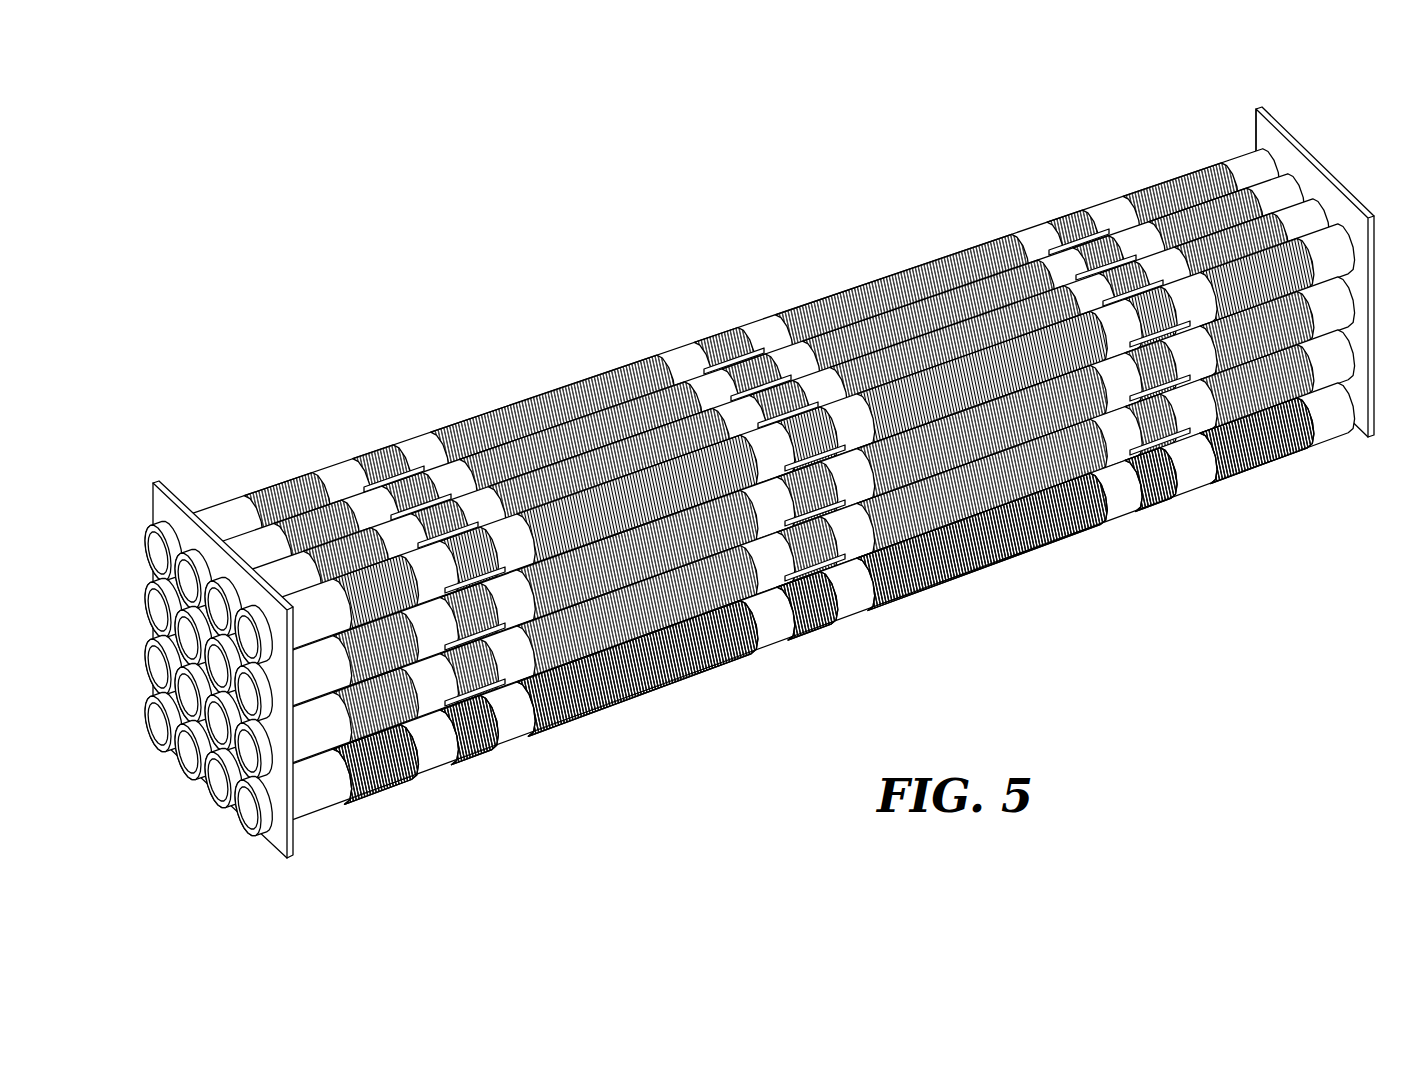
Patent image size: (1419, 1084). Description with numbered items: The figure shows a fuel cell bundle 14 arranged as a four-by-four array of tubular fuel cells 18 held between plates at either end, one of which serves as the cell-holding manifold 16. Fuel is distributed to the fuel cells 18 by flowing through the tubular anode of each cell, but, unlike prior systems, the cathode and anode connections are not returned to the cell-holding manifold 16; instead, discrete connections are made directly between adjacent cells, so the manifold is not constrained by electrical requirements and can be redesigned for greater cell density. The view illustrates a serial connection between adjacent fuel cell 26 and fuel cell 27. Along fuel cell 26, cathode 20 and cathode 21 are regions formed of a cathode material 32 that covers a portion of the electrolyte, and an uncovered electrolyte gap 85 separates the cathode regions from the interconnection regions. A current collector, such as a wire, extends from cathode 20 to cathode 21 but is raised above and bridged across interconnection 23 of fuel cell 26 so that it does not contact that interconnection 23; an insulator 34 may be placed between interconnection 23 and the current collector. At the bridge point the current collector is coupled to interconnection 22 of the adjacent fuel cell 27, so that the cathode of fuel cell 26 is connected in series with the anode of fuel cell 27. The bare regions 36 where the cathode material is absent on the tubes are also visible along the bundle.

The fuel cell bundle 14 is at (759, 492).
The cell-holding manifold 16 is at (276, 855).
The fuel cells 18 is at (152, 752).
The cathode 20 is at (373, 712).
The cathode 21 is at (792, 616).
The interconnection 22 is at (458, 626).
The interconnection 23 is at (465, 686).
The fuel cell 26 is at (307, 742).
The adjacent fuel cell 27 is at (1339, 345).
The cathode material 32 is at (302, 478).
The insulator 34 is at (535, 685).
The fin gaps 36 is at (381, 462).
The uncovered electrolyte gap 85 is at (415, 708).